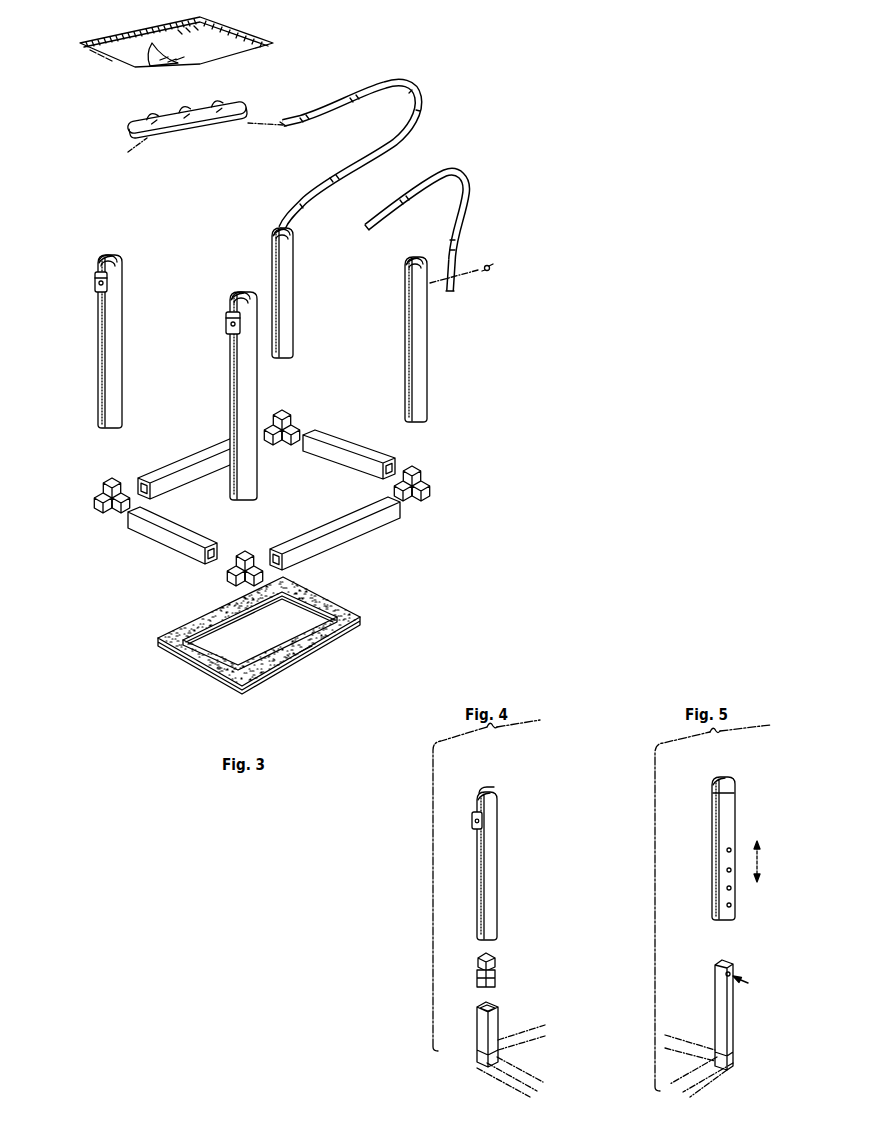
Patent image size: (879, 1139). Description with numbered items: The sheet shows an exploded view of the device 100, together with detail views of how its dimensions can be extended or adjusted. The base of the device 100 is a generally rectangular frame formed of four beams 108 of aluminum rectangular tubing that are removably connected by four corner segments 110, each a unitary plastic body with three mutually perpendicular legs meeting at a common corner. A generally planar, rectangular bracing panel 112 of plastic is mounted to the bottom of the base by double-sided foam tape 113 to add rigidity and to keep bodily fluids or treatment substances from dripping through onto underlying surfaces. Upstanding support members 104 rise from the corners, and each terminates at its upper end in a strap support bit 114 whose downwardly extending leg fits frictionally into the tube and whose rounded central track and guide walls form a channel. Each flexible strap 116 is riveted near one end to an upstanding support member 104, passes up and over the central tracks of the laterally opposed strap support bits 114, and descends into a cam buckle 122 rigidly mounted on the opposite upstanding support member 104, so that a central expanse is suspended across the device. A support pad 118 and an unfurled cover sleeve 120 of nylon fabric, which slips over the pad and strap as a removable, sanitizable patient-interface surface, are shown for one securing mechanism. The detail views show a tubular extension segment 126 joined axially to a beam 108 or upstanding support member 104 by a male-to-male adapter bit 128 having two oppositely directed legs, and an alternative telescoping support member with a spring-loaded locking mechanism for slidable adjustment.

In FIG. 3, the device 100 is at (556, 220).
In FIG. 3, the upstanding support member 104 is at (100, 372).
In FIG. 3, the beam 108 is at (196, 460).
In FIG. 3, the corner segment 110 is at (290, 428).
In FIG. 3, the bracing panel 112 is at (225, 650).
In FIG. 3, the double-sided foam tape 113 is at (300, 652).
In FIG. 3, the strap support bit 114 is at (285, 233).
In FIG. 3, the flexible strap 116 is at (462, 190).
In FIG. 3, the support pad 118 is at (168, 130).
In FIG. 3, the cover sleeve 120 is at (118, 52).
In FIG. 3, the cam buckle 122 is at (97, 283).
In FIG. 4, the extension segment 126 is at (490, 1022).
In FIG. 4, the adapter bit 128 is at (490, 970).